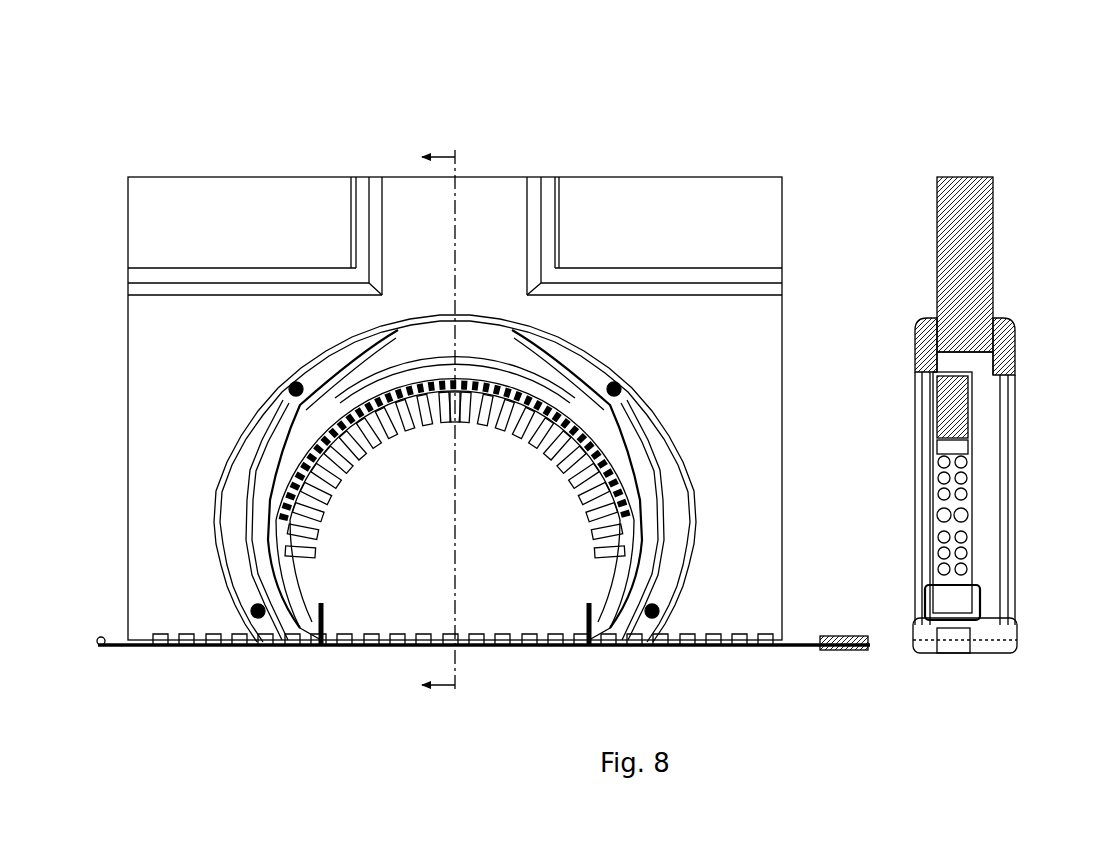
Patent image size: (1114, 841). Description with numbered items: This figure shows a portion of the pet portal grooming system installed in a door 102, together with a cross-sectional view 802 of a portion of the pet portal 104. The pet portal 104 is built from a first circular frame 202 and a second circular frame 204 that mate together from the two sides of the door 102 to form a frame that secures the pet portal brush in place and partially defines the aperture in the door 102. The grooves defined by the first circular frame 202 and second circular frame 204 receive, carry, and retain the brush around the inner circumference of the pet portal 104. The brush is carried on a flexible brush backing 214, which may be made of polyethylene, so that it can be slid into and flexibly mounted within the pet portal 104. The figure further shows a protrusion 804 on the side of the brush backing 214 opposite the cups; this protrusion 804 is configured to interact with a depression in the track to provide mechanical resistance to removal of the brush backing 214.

The door 102 is at (958, 233).
The pet portal 104 is at (643, 360).
The first circular frame 202 is at (912, 330).
The second circular frame 204 is at (1019, 348).
The brush backing 214 is at (972, 590).
The cross-sectional view 802 is at (1027, 138).
The protrusion 804 is at (107, 657).